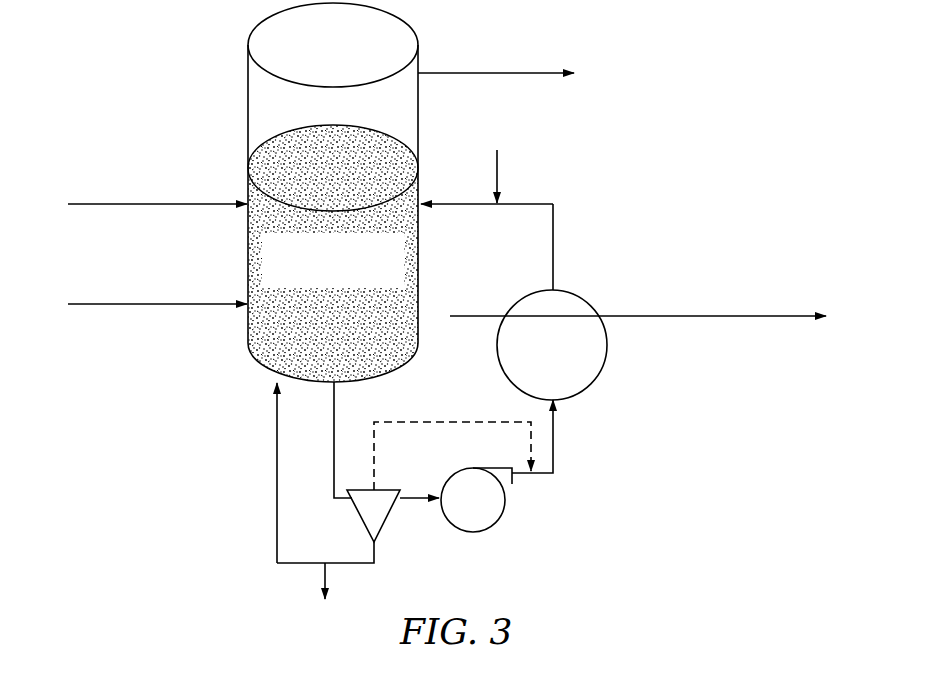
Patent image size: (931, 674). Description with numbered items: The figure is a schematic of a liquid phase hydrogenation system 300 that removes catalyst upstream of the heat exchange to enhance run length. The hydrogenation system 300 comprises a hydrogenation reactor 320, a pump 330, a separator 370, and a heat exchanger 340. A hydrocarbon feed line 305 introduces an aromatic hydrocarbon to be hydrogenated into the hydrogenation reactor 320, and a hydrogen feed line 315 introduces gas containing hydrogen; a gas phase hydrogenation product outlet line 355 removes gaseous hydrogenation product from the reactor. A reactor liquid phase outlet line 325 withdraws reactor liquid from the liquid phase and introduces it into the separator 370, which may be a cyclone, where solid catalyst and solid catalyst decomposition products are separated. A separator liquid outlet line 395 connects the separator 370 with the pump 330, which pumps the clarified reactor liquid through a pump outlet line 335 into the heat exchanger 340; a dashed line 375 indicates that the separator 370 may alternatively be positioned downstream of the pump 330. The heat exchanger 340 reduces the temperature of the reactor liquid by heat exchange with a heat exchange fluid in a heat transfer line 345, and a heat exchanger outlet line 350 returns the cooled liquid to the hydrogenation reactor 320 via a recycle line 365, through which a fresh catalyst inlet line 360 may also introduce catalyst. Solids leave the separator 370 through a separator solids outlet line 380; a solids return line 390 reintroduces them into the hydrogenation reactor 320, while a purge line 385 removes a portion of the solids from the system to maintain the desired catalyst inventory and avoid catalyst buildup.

The hydrogenation system 300 is at (730, 68).
The hydrocarbon feed line 305 is at (152, 181).
The hydrogen feed line 315 is at (150, 282).
The hydrogenation reactor 320 is at (248, 58).
The reactor liquid phase outlet line 325 is at (332, 412).
The pump 330 is at (500, 520).
The pump outlet line 335 is at (556, 445).
The heat exchanger 340 is at (600, 370).
The heat transfer line 345 is at (740, 318).
The heat exchanger outlet line 350 is at (556, 225).
The gas phase hydrogenation product outlet line 355 is at (514, 47).
The fresh catalyst inlet line 360 is at (506, 127).
The recycle line 365 is at (460, 206).
The separator 370 is at (390, 520).
The dashed line 375 is at (463, 421).
The separator solids outlet line 380 is at (378, 552).
The purge line 385 is at (332, 575).
The solids return line 390 is at (275, 532).
The separator liquid outlet line 395 is at (413, 496).